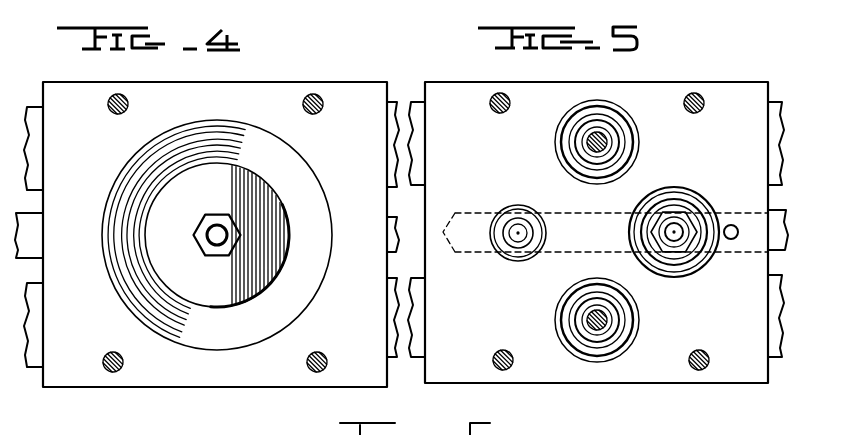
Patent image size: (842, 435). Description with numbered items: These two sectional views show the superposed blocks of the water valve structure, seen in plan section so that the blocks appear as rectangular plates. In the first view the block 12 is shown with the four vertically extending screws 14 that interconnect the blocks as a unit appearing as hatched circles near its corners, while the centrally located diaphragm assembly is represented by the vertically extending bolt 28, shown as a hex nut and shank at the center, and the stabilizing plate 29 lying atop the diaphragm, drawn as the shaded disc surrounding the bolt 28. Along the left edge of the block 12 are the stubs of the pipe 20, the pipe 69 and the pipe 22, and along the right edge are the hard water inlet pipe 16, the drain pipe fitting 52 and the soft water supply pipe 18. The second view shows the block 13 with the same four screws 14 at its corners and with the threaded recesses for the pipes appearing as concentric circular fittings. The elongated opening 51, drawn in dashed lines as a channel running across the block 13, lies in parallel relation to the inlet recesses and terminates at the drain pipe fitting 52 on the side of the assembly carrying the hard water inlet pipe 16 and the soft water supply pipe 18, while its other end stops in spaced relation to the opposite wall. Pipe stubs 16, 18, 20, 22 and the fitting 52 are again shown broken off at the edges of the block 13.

In FIG. 4, the block 12 is at (272, 378).
In FIG. 5, the block 13 is at (556, 372).
In FIG. 4, the screws 14 is at (128, 104).
In FIG. 5, the screws 14 is at (507, 112).
In FIG. 4, the hard water inlet pipe 16 is at (390, 164).
In FIG. 5, the hard water inlet pipe 16 is at (778, 100).
In FIG. 4, the soft water supply pipe 18 is at (393, 291).
In FIG. 5, the soft water supply pipe 18 is at (420, 345).
In FIG. 4, the pipe 20 is at (40, 123).
In FIG. 4, the pipe 22 is at (37, 318).
In FIG. 4, the bolt 28 is at (213, 229).
In FIG. 4, the stabilizing plate 29 is at (212, 287).
In FIG. 5, the elongated opening 51 is at (565, 208).
In FIG. 4, the drain pipe fitting 52 is at (392, 240).
In FIG. 5, the drain pipe fitting 52 is at (770, 208).
In FIG. 4, the pipe 69 is at (30, 222).